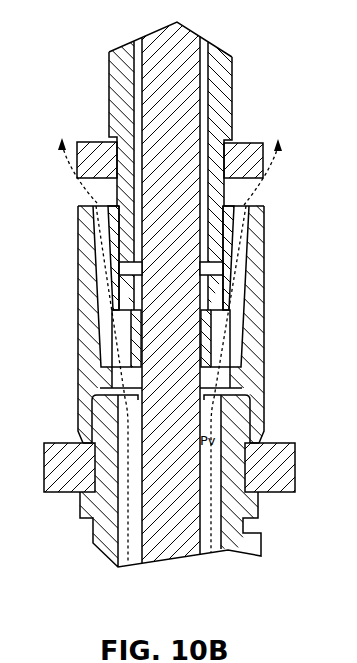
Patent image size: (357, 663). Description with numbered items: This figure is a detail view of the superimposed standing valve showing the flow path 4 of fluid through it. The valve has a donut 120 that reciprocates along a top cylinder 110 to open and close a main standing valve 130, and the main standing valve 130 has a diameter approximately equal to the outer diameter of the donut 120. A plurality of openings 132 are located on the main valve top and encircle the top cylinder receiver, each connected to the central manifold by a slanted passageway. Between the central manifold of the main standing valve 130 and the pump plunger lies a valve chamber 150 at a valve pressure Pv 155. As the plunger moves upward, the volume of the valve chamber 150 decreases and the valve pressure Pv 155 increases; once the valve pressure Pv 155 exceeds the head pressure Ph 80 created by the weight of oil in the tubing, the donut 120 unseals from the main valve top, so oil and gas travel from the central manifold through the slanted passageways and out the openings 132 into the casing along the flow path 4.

The head pressure Ph 80 is at (63, 82).
The top cylinder 110 is at (232, 92).
The donut 120 is at (263, 143).
The openings 132 is at (94, 203).
The flow path 4 is at (96, 240).
The main standing valve 130 is at (264, 351).
The valve pressure Pv 155 is at (212, 422).
The valve chamber 150 is at (217, 522).